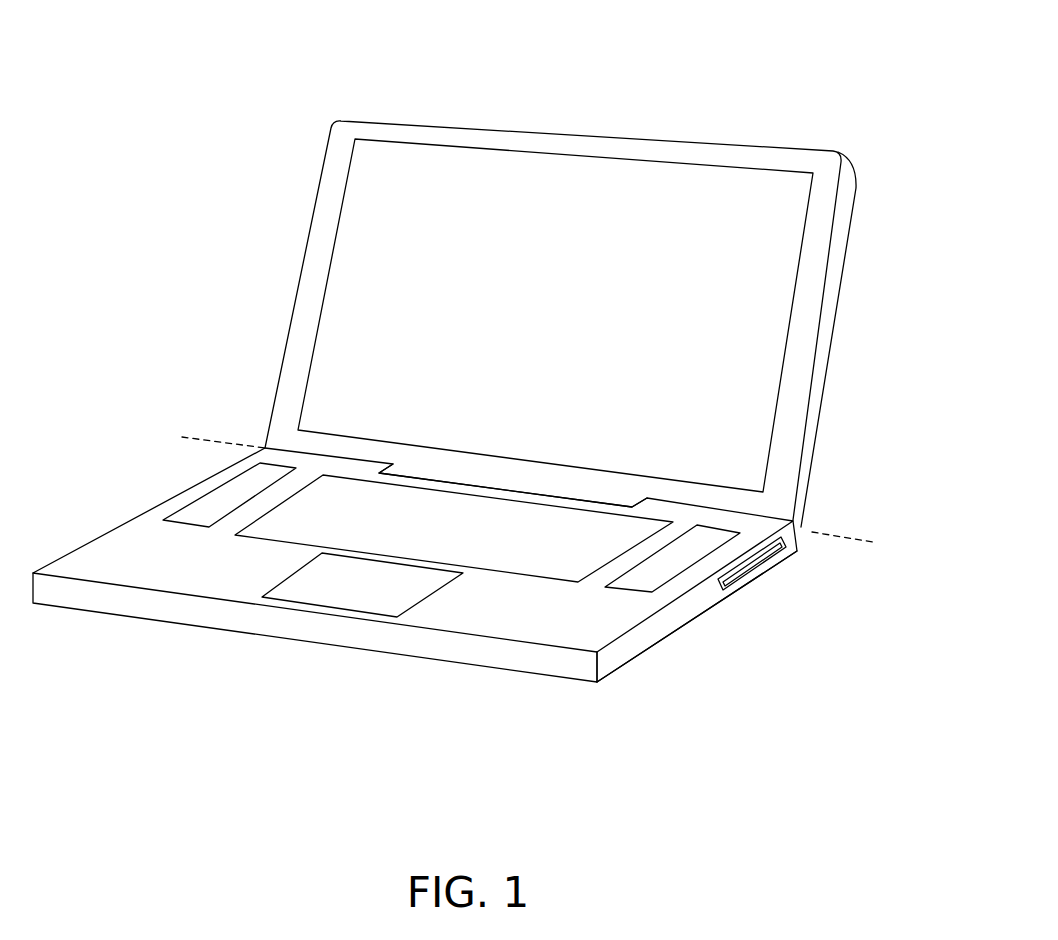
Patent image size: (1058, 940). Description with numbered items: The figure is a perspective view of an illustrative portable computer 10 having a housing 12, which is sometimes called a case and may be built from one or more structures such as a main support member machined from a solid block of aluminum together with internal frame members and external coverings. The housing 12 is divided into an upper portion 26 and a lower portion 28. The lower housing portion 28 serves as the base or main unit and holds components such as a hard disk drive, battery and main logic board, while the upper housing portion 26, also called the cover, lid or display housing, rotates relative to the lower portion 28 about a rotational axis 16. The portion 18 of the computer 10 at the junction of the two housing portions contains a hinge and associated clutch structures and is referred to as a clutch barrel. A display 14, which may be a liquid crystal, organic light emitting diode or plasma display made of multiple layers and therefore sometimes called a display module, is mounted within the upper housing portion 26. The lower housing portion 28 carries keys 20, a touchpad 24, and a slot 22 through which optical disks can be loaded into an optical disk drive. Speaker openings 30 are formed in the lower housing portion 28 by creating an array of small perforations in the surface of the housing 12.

The portable computer 10 is at (795, 87).
The housing 12 is at (287, 192).
The display 14 is at (612, 165).
The rotational axis 16 is at (213, 438).
The clutch barrel 18 is at (422, 468).
The keys 20 is at (560, 580).
The slot 22 is at (732, 580).
The touchpad 24 is at (347, 597).
The upper housing portion 26 is at (820, 368).
The lower housing portion 28 is at (623, 650).
The speaker openings 30 is at (188, 520).